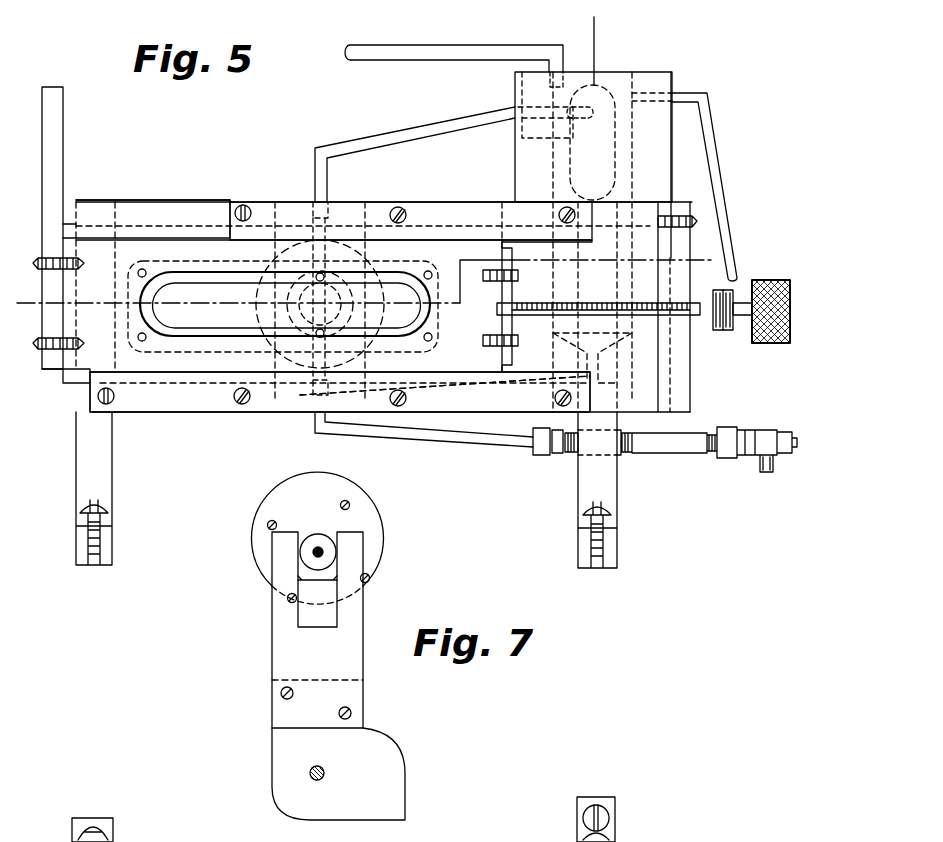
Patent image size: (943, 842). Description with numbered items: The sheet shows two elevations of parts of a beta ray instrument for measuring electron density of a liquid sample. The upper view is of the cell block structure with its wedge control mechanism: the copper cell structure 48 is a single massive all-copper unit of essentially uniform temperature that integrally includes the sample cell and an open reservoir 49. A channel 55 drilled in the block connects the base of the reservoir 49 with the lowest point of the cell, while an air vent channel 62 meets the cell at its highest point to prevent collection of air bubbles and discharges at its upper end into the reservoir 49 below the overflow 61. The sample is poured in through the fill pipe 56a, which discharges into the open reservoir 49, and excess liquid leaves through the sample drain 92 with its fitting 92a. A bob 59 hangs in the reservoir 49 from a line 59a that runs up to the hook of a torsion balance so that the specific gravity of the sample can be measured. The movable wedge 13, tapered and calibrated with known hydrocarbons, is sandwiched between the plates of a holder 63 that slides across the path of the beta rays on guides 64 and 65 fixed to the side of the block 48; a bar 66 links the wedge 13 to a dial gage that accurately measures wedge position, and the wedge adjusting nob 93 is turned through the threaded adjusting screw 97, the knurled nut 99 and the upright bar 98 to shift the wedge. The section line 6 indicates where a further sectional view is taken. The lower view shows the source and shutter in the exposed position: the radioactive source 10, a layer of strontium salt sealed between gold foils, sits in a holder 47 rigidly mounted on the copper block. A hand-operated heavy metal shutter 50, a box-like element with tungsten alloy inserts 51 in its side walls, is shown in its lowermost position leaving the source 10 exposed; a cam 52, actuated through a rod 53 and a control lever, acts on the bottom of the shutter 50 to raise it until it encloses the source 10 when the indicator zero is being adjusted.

In FIG. 5, the bar 66 is at (65, 108).
In FIG. 5, the copper cell structure 48 is at (212, 198).
In FIG. 5, the guide 64 is at (453, 210).
In FIG. 5, the holder 63 is at (168, 277).
In FIG. 5, the movable wedge 13 is at (220, 320).
In FIG. 5, the guide 65 is at (155, 398).
In FIG. 5, the air vent channel 62 is at (352, 140).
In FIG. 5, the fill pipe 56a is at (407, 45).
In FIG. 5, the line 59a is at (598, 27).
In FIG. 5, the reservoir 49 is at (611, 80).
In FIG. 5, the bob 59 is at (601, 162).
In FIG. 5, the overflow 61 is at (715, 115).
In FIG. 5, the upright bar 98 is at (692, 382).
In FIG. 5, the section line 6- 6 is at (707, 283).
In FIG. 5, the threaded adjusting screw 97 is at (647, 317).
In FIG. 5, the knurled nut 99 is at (722, 332).
In FIG. 5, the wedge adjusting nob 93 is at (768, 277).
In FIG. 5, the channel 55 is at (472, 388).
In FIG. 5, the sample drain 92 is at (448, 442).
In FIG. 5, the tube fitting 92a is at (725, 428).
In FIG. 7, the holder 47 is at (365, 522).
In FIG. 7, the radioactive source 10 is at (318, 546).
In FIG. 7, the tungsten alloy inserts 51 is at (325, 615).
In FIG. 7, the shutter 50 is at (268, 650).
In FIG. 7, the cam 52 is at (270, 757).
In FIG. 7, the rod 53 is at (327, 770).